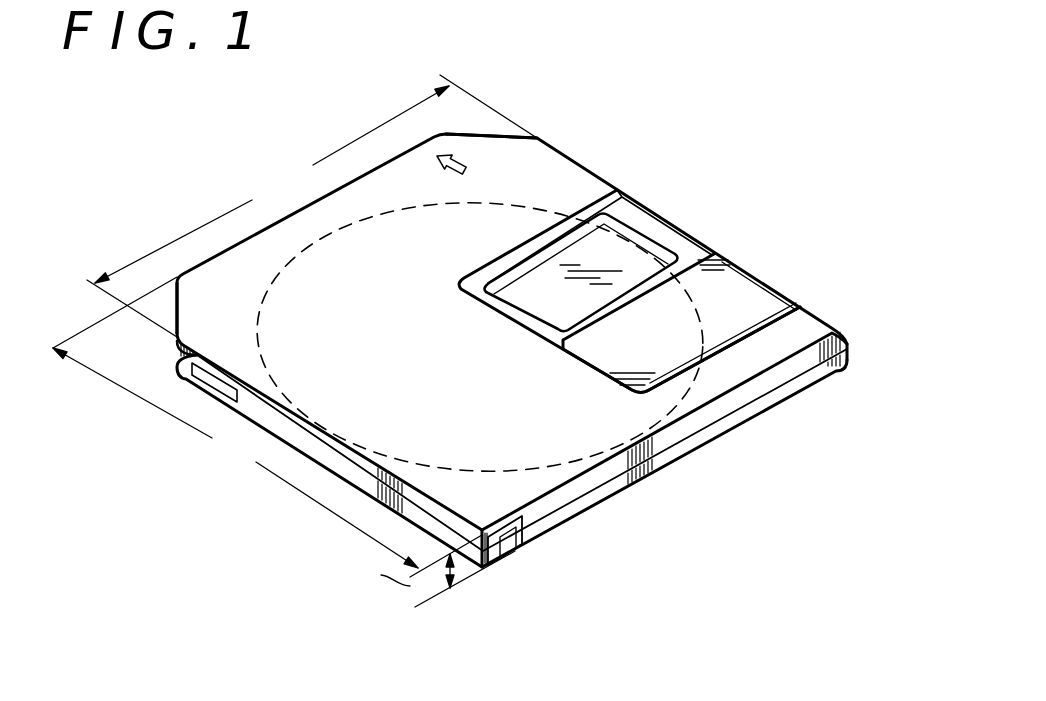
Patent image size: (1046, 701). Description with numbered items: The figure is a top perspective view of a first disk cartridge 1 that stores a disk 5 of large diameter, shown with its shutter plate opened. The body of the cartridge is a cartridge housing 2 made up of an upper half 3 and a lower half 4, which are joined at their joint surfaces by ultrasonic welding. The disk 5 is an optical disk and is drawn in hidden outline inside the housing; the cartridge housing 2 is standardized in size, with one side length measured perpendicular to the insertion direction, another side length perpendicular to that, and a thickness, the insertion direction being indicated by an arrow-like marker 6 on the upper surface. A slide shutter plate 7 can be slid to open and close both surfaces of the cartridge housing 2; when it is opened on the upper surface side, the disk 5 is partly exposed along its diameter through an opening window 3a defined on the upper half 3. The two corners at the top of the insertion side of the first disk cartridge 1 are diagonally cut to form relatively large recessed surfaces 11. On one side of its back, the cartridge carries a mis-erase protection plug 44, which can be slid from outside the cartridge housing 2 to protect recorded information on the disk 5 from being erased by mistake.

The first disk cartridge 1 is at (668, 474).
The cartridge housing 2 is at (827, 397).
The upper half 3 is at (763, 384).
The opening window 3a is at (645, 224).
The lower half 4 is at (758, 405).
The disk 5 is at (637, 261).
The arrow-like marker 6 is at (464, 167).
The slide shutter plate 7 is at (755, 289).
The recessed surfaces 11 is at (487, 134).
The mis-erase protection plug 44 is at (507, 554).